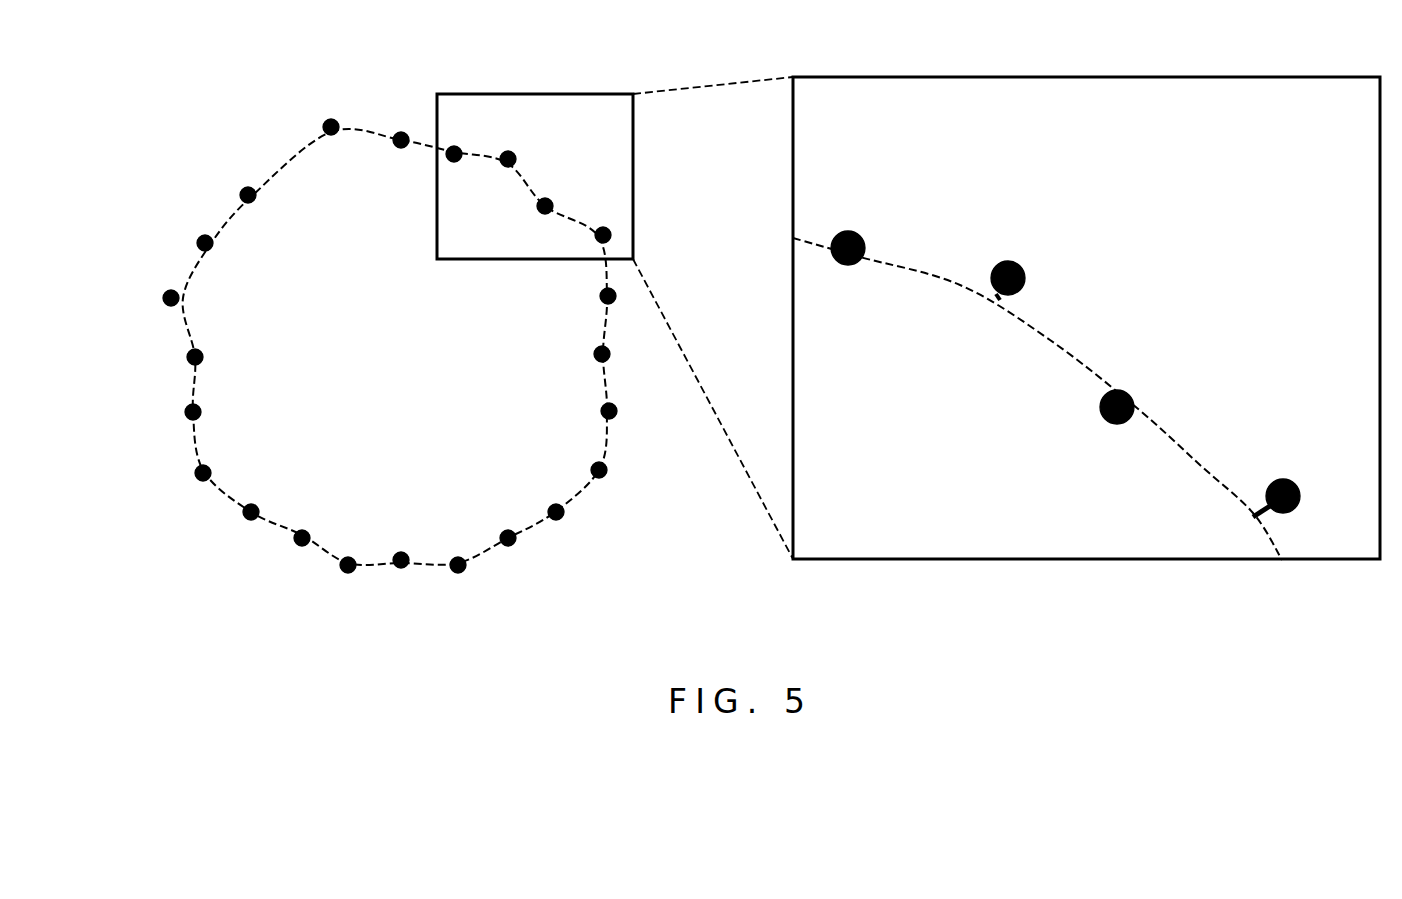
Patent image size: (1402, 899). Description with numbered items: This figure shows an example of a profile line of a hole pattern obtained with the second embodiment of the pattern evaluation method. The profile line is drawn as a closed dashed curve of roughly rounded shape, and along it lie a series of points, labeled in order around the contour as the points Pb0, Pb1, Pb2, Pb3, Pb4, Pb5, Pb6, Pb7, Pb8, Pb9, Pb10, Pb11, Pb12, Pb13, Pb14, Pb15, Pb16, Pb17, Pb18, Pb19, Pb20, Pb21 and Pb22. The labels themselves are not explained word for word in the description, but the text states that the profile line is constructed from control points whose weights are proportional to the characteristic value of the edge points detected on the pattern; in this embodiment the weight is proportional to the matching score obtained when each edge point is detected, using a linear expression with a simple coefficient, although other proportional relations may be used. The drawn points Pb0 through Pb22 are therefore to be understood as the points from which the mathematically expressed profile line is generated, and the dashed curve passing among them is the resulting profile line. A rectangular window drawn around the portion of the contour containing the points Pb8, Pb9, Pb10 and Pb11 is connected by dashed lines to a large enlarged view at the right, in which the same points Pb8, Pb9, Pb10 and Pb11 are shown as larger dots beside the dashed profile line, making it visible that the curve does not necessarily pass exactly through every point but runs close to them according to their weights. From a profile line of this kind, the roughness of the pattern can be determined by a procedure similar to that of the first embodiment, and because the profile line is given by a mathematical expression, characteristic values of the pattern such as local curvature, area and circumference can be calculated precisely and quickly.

The boundary point Pb0 is at (195, 475).
The boundary point Pb1 is at (185, 412).
The boundary point Pb2 is at (187, 357).
The boundary point Pb3 is at (163, 298).
The boundary point Pb4 is at (197, 243).
The boundary point Pb5 is at (240, 193).
The boundary point Pb6 is at (328, 118).
The boundary point Pb7 is at (399, 131).
The boundary point Pb8 is at (455, 145).
The boundary point Pb9 is at (509, 151).
The boundary point Pb10 is at (547, 197).
The boundary point Pb11 is at (594, 237).
The boundary point Pb12 is at (599, 297).
The boundary point Pb13 is at (594, 355).
The boundary point Pb14 is at (600, 412).
The boundary point Pb15 is at (608, 470).
The boundary point Pb16 is at (565, 513).
The boundary point Pb17 is at (508, 528).
The boundary point Pb18 is at (467, 566).
The boundary point Pb19 is at (400, 551).
The boundary point Pb20 is at (348, 574).
The boundary point Pb21 is at (302, 529).
The boundary point Pb22 is at (250, 521).